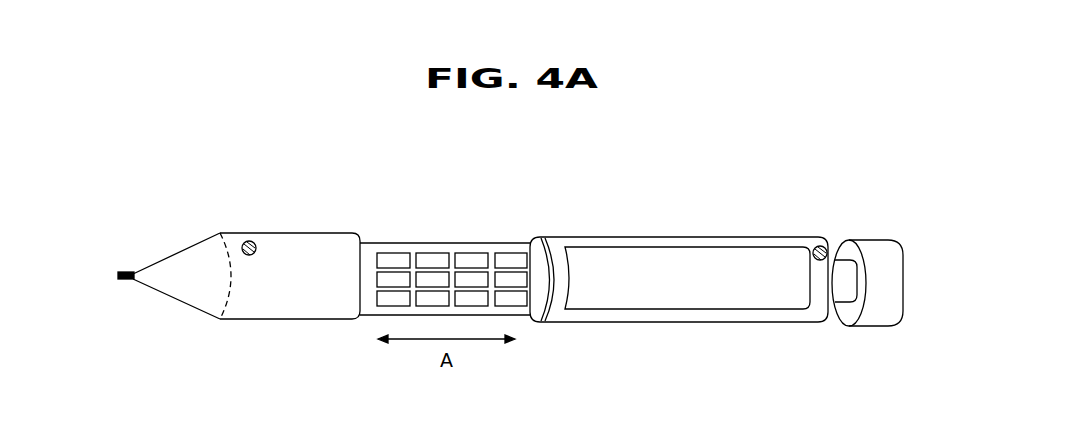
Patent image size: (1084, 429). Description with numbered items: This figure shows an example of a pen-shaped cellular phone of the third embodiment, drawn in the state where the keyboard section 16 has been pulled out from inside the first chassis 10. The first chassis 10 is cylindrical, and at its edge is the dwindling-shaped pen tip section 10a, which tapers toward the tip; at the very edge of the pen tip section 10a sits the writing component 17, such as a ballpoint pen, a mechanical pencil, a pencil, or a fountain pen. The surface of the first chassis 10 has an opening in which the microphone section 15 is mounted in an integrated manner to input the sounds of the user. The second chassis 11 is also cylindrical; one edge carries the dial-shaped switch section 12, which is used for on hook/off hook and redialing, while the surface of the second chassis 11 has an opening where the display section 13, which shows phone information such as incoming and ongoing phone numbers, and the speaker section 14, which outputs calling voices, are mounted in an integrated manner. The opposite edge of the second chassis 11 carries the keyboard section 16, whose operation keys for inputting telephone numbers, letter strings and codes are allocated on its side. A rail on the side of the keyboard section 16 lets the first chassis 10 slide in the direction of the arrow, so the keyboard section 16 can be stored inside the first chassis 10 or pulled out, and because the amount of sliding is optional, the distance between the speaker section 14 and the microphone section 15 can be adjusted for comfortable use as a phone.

The first chassis 10 is at (281, 321).
The pen tip section 10a is at (183, 303).
The second chassis 11 is at (630, 327).
The dial-shaped switch section 12 is at (859, 242).
The display section 13 is at (666, 259).
The speaker section 14 is at (814, 246).
The microphone section 15 is at (252, 241).
The keyboard section 16 is at (456, 243).
The writing component 17 is at (126, 271).